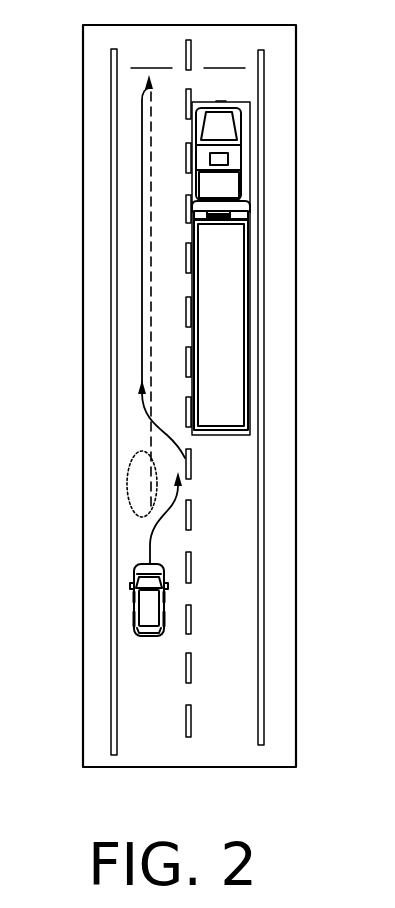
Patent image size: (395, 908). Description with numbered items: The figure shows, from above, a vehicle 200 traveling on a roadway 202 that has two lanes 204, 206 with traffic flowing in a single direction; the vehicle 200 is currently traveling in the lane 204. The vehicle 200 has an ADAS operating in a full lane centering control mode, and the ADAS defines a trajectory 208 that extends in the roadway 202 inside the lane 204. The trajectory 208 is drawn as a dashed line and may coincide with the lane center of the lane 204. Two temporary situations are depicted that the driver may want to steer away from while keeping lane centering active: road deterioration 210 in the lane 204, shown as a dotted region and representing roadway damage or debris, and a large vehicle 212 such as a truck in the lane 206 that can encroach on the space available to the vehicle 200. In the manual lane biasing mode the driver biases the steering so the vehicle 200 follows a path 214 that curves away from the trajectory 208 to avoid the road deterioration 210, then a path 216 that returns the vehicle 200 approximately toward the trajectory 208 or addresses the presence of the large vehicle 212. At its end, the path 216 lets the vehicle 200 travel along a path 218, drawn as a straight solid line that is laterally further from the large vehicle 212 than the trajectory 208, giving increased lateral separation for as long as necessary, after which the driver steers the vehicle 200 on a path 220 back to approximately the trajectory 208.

The vehicle 200 is at (133, 572).
The roadway 202 is at (111, 307).
The lane 204 is at (152, 56).
The lane 206 is at (225, 56).
The trajectory 208 is at (150, 178).
The road deterioration 210 is at (128, 461).
The large vehicle 212 is at (248, 183).
The path 214 is at (158, 524).
The path 216 is at (185, 458).
The path 218 is at (140, 283).
The path 220 is at (143, 89).